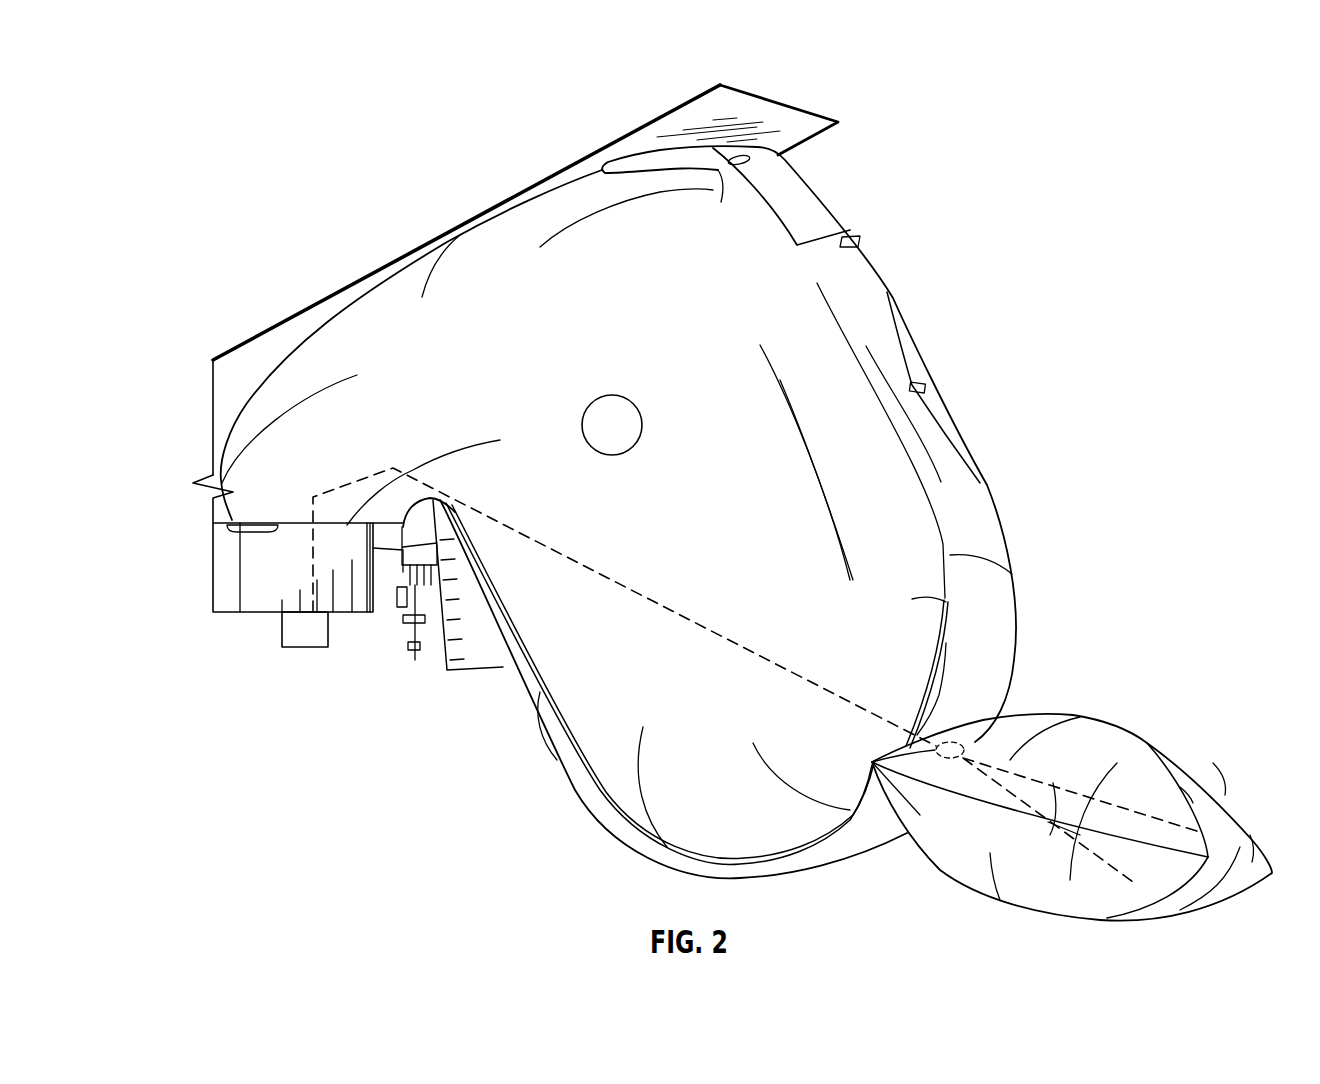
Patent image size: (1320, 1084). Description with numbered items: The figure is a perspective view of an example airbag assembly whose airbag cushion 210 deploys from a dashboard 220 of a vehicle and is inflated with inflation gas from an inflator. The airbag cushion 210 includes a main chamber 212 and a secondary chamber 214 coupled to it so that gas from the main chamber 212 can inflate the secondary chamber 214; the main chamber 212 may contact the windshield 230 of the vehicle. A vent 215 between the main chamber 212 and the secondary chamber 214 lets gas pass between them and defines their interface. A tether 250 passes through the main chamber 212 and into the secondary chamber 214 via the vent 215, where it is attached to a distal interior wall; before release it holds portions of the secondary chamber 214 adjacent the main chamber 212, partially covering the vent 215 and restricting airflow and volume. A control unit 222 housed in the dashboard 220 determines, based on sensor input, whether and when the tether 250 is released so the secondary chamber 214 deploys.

The airbag cushion 210 is at (1010, 147).
The main chamber 212 is at (757, 340).
The secondary chamber 214 is at (1045, 871).
The vent 215 is at (942, 758).
The dashboard 220 is at (213, 567).
The control unit 222 is at (303, 648).
The windshield 230 is at (780, 103).
The tether 250 is at (615, 580).